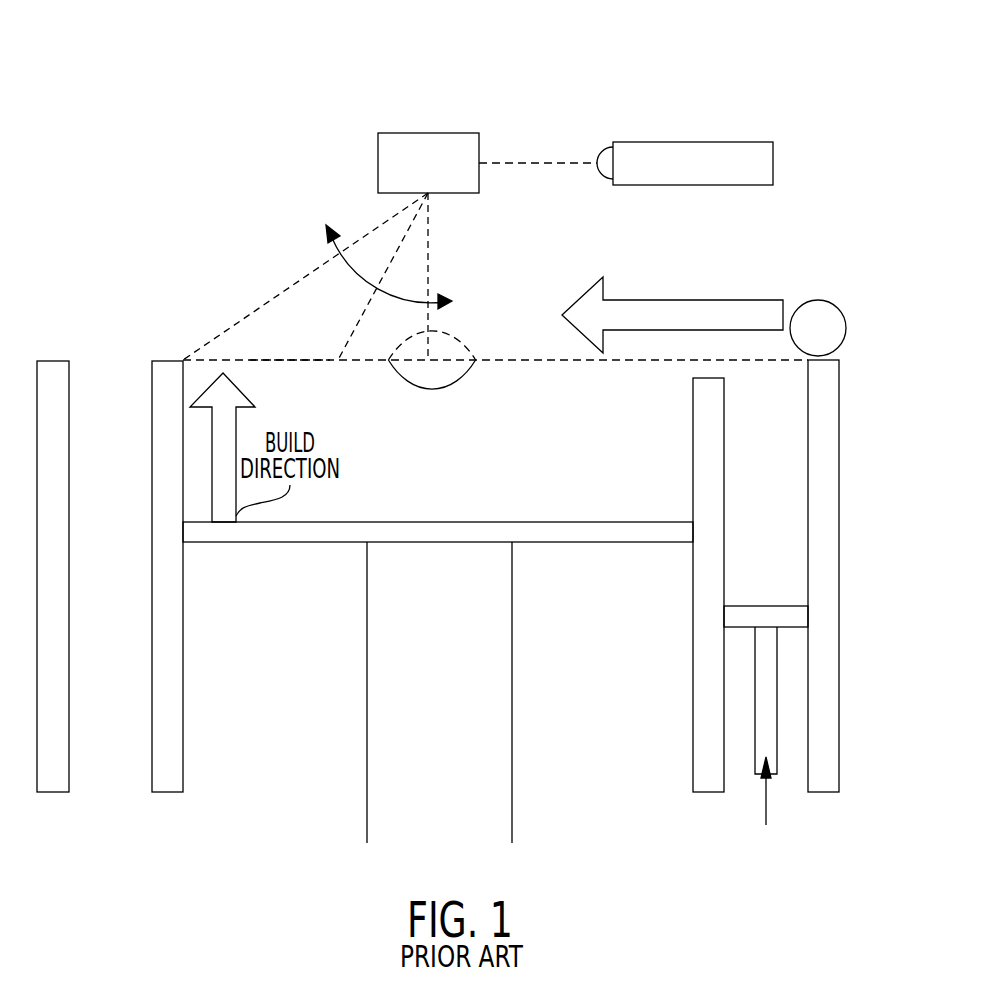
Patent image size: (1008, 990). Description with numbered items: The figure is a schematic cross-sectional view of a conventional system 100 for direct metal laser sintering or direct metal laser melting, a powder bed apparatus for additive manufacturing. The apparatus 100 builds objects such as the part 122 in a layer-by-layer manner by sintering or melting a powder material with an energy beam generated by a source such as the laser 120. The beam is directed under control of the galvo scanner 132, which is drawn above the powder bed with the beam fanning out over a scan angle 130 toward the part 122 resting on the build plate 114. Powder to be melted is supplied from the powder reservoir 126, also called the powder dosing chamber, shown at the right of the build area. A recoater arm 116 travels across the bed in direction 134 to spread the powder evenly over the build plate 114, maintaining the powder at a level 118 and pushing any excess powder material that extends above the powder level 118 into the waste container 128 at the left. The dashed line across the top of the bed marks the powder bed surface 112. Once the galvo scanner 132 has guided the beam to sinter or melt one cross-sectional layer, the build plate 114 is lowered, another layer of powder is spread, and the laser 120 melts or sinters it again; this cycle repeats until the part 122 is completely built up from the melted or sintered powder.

The conventional system 100 is at (198, 94).
The powder bed 112 is at (535, 378).
The build plate 114 is at (645, 522).
The recoater arm 116 is at (816, 300).
The powder level 118 is at (316, 357).
The laser 120 is at (665, 142).
The part 122 is at (372, 428).
The powder reservoir 126 is at (790, 447).
The waste container 128 is at (135, 680).
The laser scan angle 130 is at (385, 272).
The galvo scanner 132 is at (428, 133).
The direction 134 is at (588, 293).